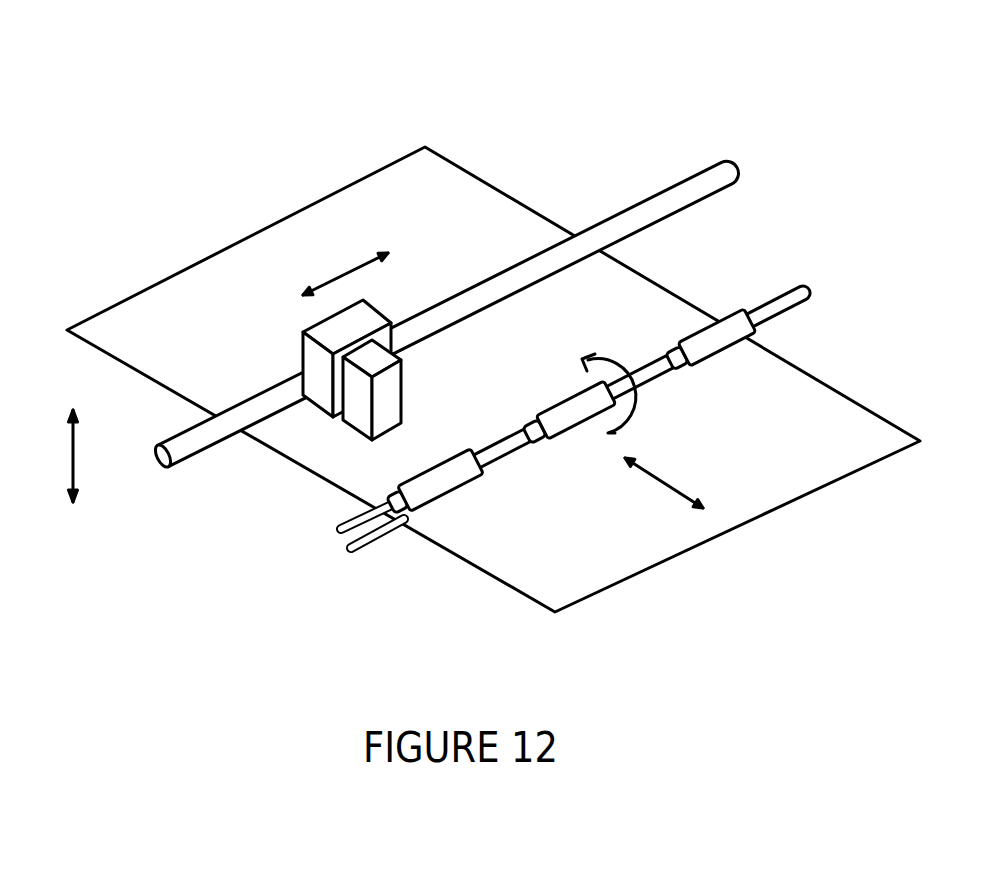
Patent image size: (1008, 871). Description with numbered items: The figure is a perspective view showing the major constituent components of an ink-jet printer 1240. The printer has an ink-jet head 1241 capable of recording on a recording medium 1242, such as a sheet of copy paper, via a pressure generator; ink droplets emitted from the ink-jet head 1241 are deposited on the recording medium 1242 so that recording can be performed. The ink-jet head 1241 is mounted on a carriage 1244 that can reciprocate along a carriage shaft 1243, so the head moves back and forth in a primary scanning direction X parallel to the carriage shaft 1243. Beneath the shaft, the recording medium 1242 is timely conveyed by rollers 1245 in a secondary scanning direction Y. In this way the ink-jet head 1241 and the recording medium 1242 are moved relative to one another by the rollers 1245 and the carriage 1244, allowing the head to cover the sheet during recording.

The ink-jet printer 1240 is at (519, 70).
The ink-jet head 1241 is at (398, 390).
The recording medium 1242 is at (838, 402).
The carriage shaft 1243 is at (642, 204).
The carriage 1244 is at (410, 292).
The rollers 1245 is at (725, 336).